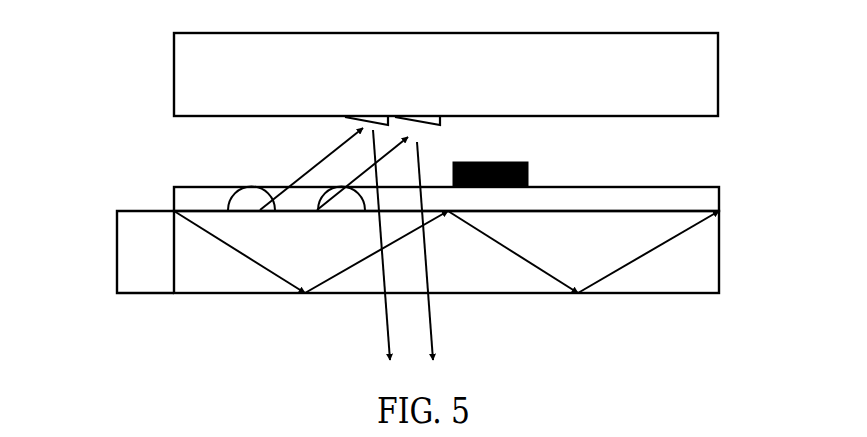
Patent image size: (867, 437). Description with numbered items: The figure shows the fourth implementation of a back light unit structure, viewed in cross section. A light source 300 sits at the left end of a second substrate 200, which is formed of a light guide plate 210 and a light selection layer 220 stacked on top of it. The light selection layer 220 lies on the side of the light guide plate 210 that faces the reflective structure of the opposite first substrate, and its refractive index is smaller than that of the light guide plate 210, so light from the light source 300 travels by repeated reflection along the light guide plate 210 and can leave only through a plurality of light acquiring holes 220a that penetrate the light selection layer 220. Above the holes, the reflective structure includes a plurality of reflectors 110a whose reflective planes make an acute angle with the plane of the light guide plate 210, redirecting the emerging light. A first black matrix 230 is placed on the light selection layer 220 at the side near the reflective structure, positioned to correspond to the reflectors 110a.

The reflector 110a is at (439, 125).
The second substrate 200 is at (727, 187).
The light guide plate 210 is at (453, 290).
The light selection layer 220 is at (627, 197).
The light acquiring hole 220a is at (272, 192).
The first black matrix 230 is at (530, 165).
The light source 300 is at (125, 255).